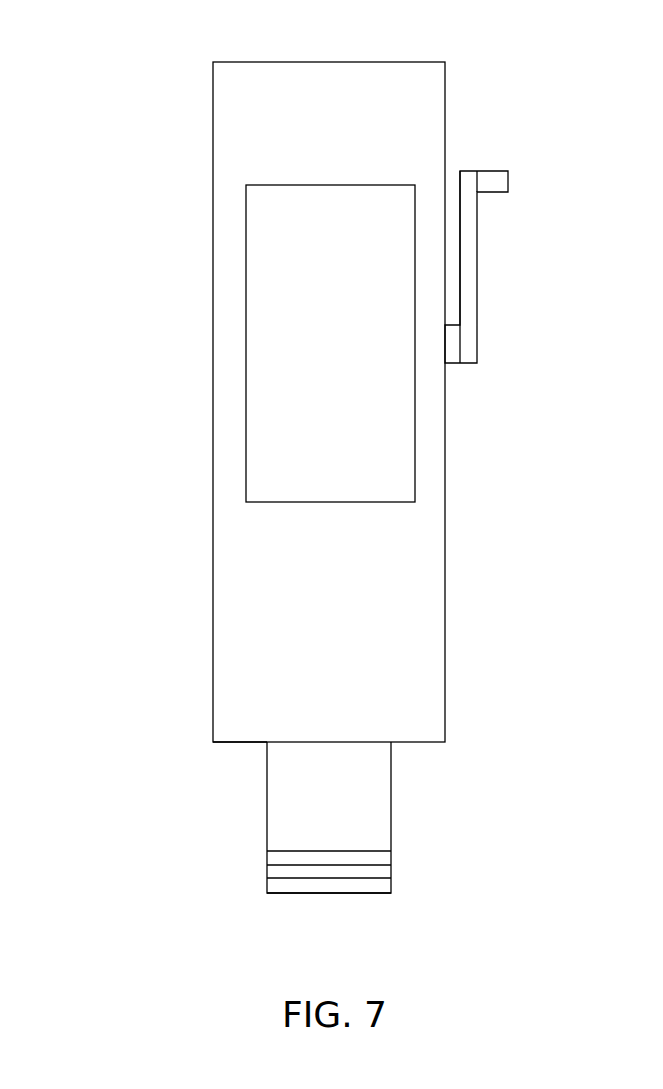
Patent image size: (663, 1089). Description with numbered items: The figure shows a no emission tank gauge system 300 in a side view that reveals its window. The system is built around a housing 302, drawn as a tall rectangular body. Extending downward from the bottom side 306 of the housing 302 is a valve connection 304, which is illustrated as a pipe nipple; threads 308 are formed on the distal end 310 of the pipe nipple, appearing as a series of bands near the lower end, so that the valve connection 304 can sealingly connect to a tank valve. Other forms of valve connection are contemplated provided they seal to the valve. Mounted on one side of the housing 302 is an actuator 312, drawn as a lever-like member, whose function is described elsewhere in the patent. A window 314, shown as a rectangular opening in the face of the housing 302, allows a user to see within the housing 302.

The no emission tank gauge system 300 is at (180, 60).
The housing 302 is at (245, 133).
The valve connection 304 is at (370, 790).
The bottom side 306 is at (233, 745).
The threads 308 is at (380, 872).
The distal end 310 is at (287, 896).
The actuator 312 is at (469, 178).
The window 314 is at (287, 343).